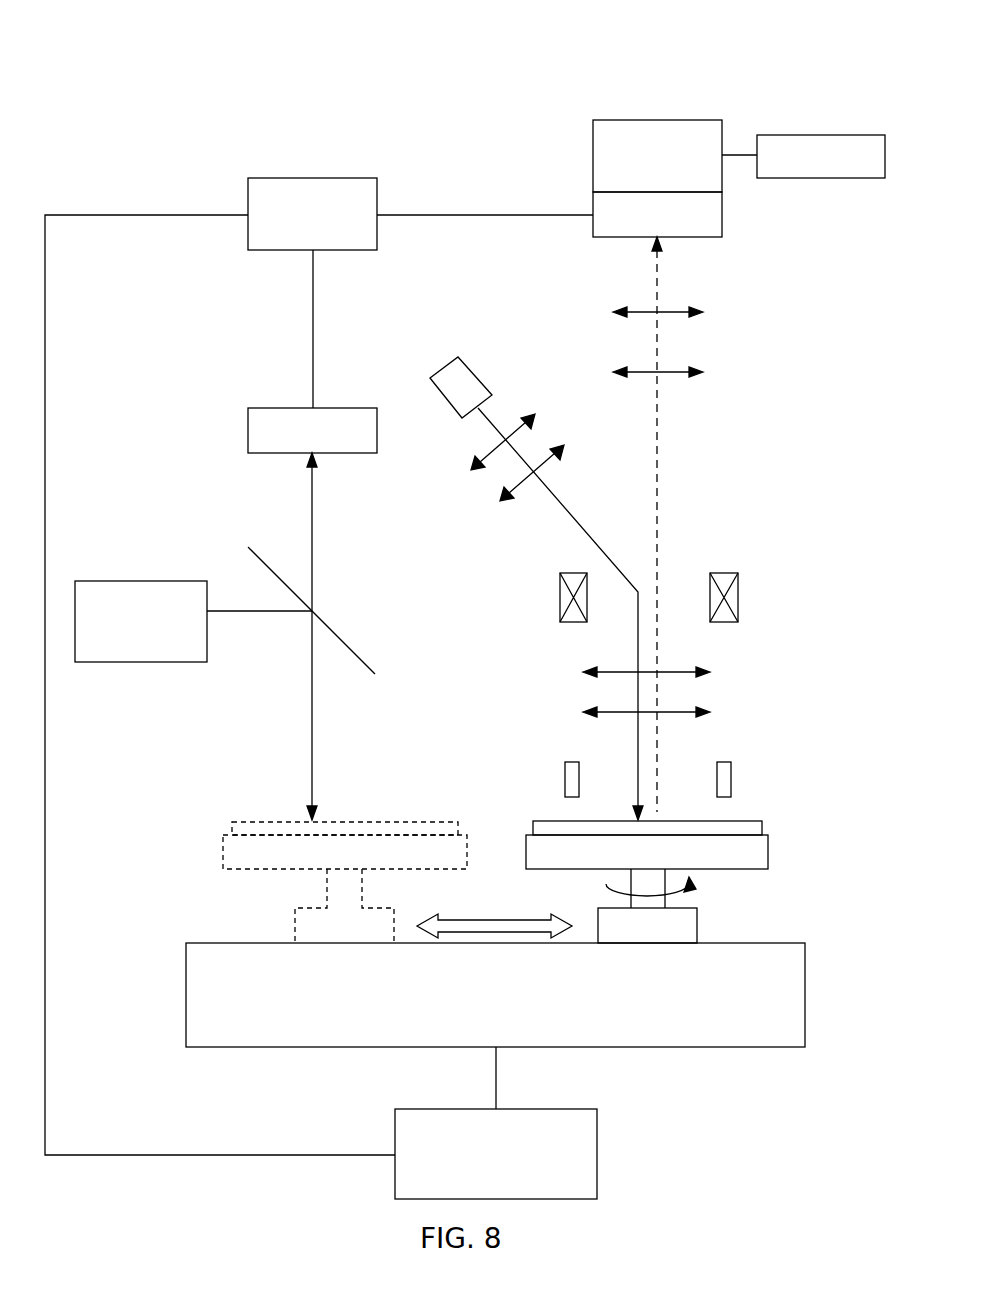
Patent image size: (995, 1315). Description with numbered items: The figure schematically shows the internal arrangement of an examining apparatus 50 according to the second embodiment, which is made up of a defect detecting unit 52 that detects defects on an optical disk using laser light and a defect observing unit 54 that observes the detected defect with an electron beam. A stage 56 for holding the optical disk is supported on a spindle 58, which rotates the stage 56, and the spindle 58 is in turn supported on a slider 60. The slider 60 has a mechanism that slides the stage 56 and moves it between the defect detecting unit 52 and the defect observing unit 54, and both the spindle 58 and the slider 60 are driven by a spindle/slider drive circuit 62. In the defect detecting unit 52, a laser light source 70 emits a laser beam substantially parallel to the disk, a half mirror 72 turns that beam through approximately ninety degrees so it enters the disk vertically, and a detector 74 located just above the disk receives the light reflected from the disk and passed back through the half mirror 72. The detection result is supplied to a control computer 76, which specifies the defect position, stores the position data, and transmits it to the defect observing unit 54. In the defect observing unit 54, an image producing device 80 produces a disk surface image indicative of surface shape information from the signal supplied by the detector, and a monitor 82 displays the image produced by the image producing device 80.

The examining apparatus 50 is at (122, 120).
The defect detecting unit 52 is at (155, 342).
The defect observing unit 54 is at (799, 424).
The stage 56 is at (750, 852).
The spindle 58 is at (688, 920).
The slider 60 is at (725, 1033).
The spindle/slider drive circuit 62 is at (597, 1155).
The laser light source 70 is at (145, 580).
The half mirror 72 is at (343, 640).
The detector 74 is at (345, 408).
The control computer 76 is at (345, 178).
The image producing device 80 is at (593, 157).
The monitor 82 is at (820, 178).